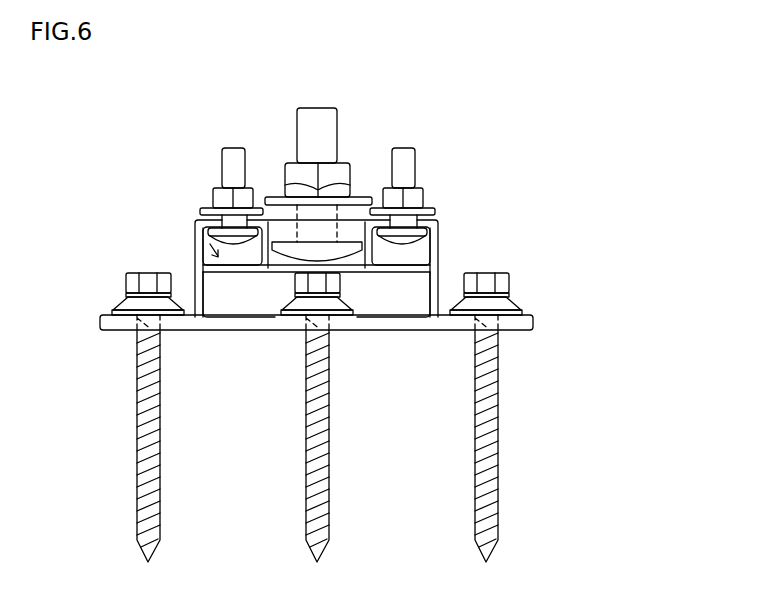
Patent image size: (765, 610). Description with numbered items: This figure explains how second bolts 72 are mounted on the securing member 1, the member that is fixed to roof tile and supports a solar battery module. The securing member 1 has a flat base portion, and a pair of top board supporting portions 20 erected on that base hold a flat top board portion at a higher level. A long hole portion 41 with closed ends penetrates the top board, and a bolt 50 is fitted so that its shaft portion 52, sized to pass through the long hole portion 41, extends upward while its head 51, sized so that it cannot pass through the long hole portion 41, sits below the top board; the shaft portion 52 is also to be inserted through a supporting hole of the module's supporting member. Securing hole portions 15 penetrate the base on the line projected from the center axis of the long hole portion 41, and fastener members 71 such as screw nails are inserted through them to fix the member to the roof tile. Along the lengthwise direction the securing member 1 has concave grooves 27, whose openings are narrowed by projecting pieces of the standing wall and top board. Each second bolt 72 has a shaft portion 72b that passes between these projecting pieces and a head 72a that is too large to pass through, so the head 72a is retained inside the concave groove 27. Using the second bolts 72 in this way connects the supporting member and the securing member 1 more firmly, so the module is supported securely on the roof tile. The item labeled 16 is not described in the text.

The securing member 1 is at (509, 233).
The securing hole portion 15 is at (305, 338).
The fixing screw 16 is at (136, 338).
The top board supporting portion 20 is at (443, 236).
The concave groove 27 is at (200, 232).
The long hole portion 41 is at (303, 230).
The bolt 50 is at (318, 107).
The head 51 is at (343, 262).
The shaft portion 52 is at (337, 140).
The fastener member 71 is at (160, 413).
The second bolt 72 is at (233, 147).
The head 72a is at (238, 240).
The shaft portion 72b is at (222, 163).